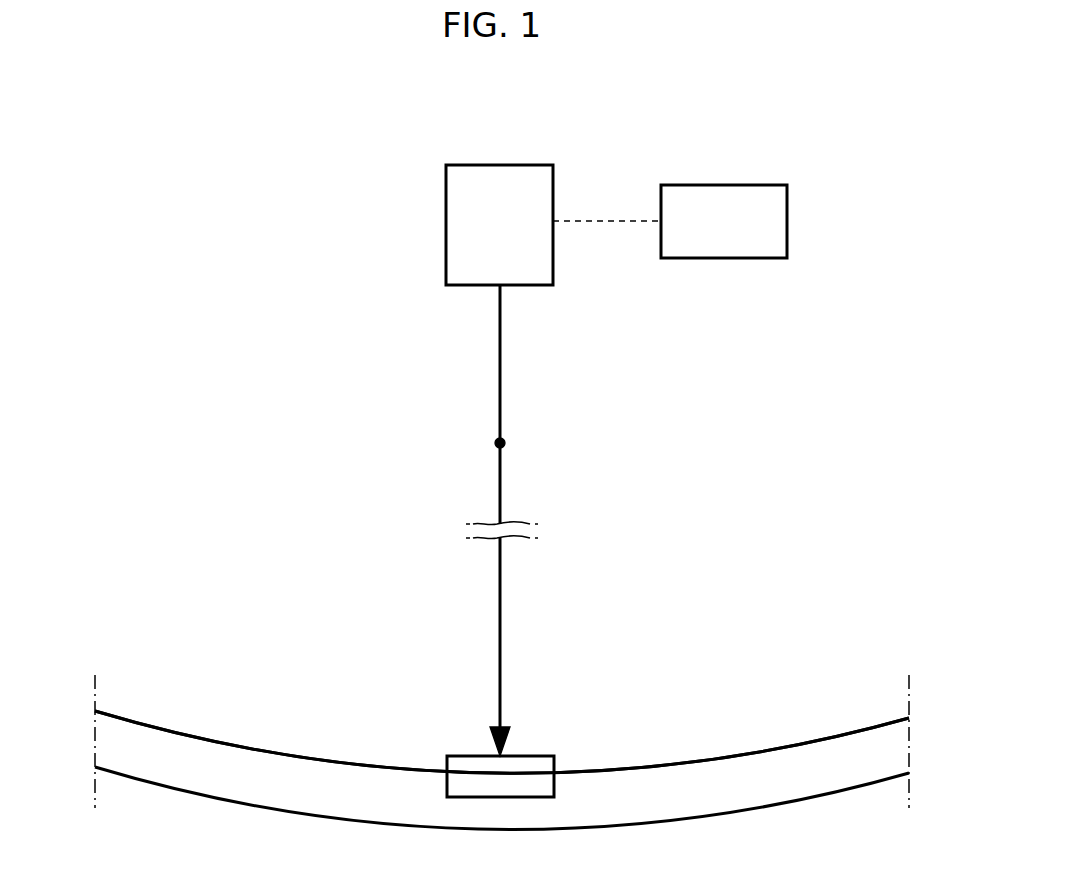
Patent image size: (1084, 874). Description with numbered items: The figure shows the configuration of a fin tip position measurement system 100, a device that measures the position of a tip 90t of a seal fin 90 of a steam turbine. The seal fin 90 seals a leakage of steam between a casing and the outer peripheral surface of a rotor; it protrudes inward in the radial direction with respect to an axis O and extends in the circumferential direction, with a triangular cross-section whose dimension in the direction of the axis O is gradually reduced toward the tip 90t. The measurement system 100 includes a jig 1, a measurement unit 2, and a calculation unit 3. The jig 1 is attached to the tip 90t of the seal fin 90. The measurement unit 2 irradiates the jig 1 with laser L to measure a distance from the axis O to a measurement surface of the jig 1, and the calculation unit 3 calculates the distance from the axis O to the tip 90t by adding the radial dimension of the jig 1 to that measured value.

The fin tip position measurement system 100 is at (317, 165).
The jig 1 is at (538, 756).
The measurement unit 2 is at (446, 227).
The calculation unit 3 is at (787, 221).
The laser L is at (500, 360).
The axis O is at (504, 441).
The seal fin 90 is at (212, 757).
The tip 90t is at (350, 767).